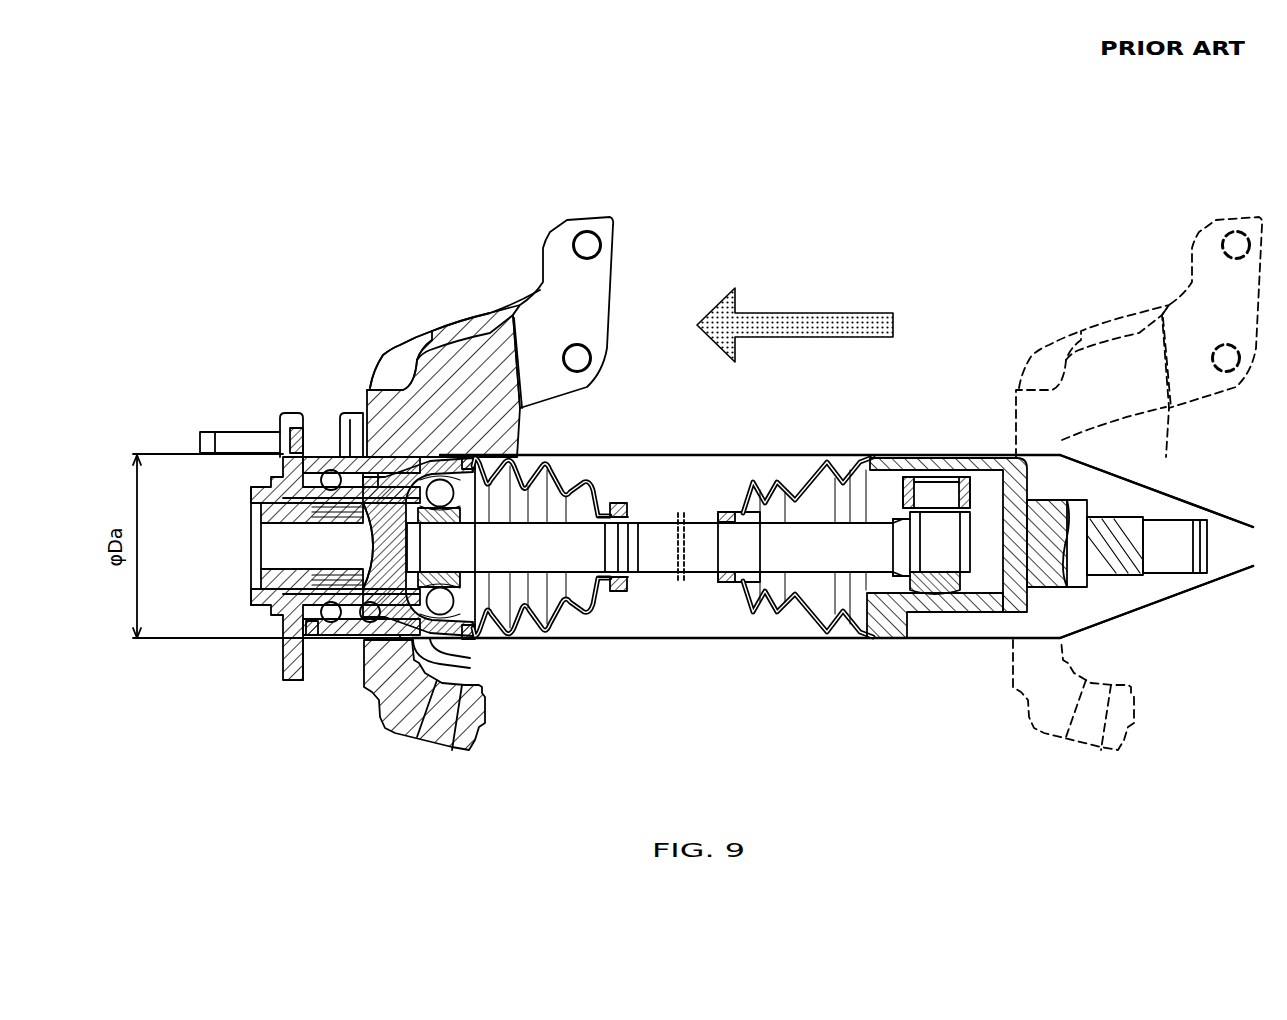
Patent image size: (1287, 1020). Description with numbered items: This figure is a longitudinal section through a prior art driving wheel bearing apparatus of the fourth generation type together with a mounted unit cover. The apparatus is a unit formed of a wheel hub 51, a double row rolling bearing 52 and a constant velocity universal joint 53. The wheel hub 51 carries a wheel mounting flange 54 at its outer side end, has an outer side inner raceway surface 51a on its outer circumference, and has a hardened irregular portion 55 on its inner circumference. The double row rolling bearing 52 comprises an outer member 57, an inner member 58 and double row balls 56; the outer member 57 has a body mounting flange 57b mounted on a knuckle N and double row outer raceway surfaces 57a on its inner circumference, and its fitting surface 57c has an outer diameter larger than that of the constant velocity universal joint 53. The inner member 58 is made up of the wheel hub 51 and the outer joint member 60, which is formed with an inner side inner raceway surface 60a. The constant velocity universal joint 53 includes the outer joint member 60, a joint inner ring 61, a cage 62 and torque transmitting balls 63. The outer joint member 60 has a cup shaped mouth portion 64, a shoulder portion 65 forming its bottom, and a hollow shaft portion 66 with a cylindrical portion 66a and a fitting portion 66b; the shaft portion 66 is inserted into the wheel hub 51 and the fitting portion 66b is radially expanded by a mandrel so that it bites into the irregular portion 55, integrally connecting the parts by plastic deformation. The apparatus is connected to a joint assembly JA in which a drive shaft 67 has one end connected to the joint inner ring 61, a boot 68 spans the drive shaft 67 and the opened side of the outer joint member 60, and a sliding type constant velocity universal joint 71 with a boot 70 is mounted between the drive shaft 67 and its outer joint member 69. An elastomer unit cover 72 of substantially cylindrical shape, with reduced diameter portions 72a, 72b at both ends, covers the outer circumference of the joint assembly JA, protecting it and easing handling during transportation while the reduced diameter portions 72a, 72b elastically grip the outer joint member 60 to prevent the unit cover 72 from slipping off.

The wheel hub 51 is at (268, 495).
The outer side inner raceway surface 51a is at (249, 498).
The double row rolling bearing 52 is at (332, 406).
The constant velocity universal joint 53 is at (452, 450).
The wheel mounting flange 54 is at (280, 432).
The hardened irregular portion 55 is at (263, 513).
The double row balls 56 is at (350, 640).
The outer member 57 is at (338, 468).
The double row outer raceway surfaces 57a is at (305, 645).
The body mounting flange 57b is at (352, 412).
The fitting surface 57c is at (395, 388).
The inner member 58 is at (275, 530).
The outer joint member 60 is at (450, 456).
The inner side inner raceway surface 60a is at (420, 452).
The joint inner ring 61 is at (520, 607).
The cage 62 is at (452, 606).
The torque transmitting balls 63 is at (482, 630).
The cup shaped mouth portion 64 is at (507, 482).
The shoulder portion 65 is at (438, 522).
The hollow shaft portion 66 is at (350, 497).
The cylindrical portion 66a is at (378, 538).
The fitting portion 66b is at (263, 580).
The drive shaft 67 is at (653, 545).
The boot 68 is at (585, 482).
The outer joint member 69 is at (993, 456).
The boot 70 is at (832, 453).
The sliding type constant velocity universal joint 71 is at (952, 450).
The elastomer unit cover 72 is at (655, 452).
The reduced diameter portion 72a is at (470, 668).
The reduced diameter portion 72b is at (1157, 490).
The knuckle N is at (495, 415).
The joint assembly JA is at (748, 453).